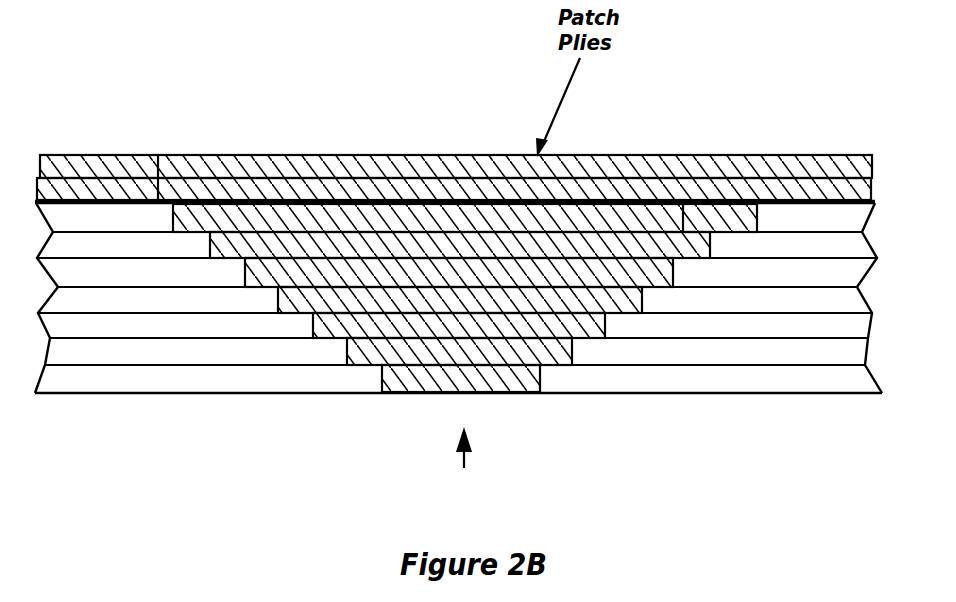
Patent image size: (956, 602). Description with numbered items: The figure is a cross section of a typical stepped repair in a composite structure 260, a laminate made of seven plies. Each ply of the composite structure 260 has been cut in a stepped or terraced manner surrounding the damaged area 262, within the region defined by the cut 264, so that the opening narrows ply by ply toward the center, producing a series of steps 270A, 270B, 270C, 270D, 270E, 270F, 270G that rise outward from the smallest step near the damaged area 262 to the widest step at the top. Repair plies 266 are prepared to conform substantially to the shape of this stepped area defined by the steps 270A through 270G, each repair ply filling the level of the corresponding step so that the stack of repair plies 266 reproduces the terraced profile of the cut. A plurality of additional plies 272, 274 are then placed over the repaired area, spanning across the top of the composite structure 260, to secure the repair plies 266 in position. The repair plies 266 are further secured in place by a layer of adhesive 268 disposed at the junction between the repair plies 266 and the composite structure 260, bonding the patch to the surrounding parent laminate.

The composite structure 260 is at (662, 90).
The damaged area 262 is at (462, 464).
The cut 264 is at (393, 395).
The repair plies 266 is at (683, 213).
The layer of adhesive 268 is at (823, 200).
The step 270A is at (372, 372).
The step 270B is at (345, 345).
The step 270C is at (307, 317).
The step 270D is at (264, 290).
The step 270E is at (223, 253).
The step 270F is at (192, 225).
The step 270G is at (158, 172).
The additional ply 272 is at (765, 198).
The additional ply 274 is at (810, 177).